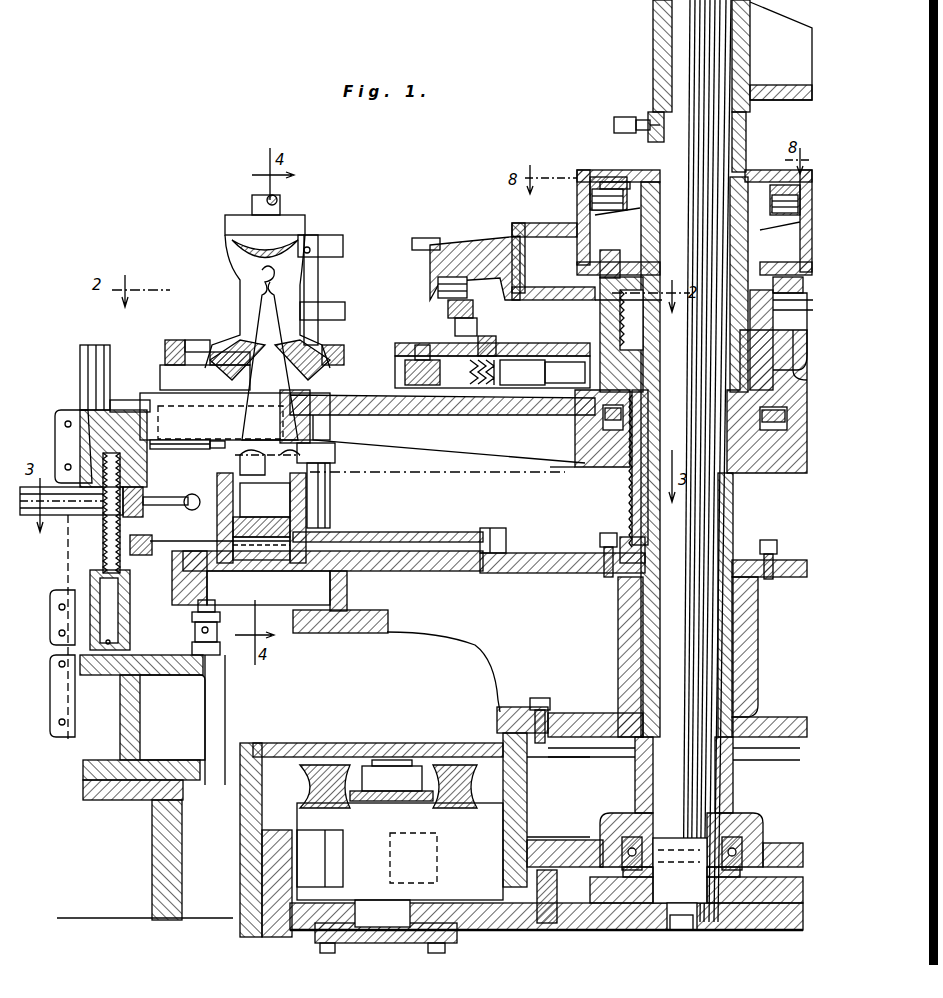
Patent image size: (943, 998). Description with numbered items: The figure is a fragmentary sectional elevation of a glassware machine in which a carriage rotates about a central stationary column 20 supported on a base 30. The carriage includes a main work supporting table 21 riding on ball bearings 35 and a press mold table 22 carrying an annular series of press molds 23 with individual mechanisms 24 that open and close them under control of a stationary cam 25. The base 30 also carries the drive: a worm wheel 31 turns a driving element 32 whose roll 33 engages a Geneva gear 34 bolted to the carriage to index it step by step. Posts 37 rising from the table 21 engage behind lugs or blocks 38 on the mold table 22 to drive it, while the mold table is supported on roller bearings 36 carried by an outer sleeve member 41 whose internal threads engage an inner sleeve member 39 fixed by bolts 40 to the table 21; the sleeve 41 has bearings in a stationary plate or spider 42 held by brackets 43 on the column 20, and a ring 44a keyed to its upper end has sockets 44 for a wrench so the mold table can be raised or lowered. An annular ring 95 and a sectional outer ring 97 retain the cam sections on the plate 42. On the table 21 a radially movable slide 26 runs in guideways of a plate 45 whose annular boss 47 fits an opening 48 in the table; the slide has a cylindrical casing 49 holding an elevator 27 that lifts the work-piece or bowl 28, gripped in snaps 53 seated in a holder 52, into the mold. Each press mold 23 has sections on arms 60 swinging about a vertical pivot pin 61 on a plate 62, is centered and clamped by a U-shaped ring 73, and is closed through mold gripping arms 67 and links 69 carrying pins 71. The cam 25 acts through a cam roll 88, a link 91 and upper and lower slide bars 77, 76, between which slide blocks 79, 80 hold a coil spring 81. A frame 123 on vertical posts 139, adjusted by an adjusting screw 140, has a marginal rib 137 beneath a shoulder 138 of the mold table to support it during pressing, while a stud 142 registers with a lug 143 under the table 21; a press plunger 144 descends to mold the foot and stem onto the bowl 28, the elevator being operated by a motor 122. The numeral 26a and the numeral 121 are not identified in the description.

The central stationary column 20 is at (700, 658).
The main work supporting table 21 is at (572, 575).
The press mold table 22 is at (512, 414).
The press mold 23 is at (240, 306).
The mold operating mechanism 24 is at (415, 321).
The stationary cam 25 is at (500, 300).
The slide 26 is at (450, 532).
The rod end 26a is at (210, 553).
The elevator 27 is at (337, 455).
The work-piece or bowl 28 is at (250, 418).
The base 30 is at (615, 925).
The worm wheel 31 is at (313, 770).
The driving element 32 is at (315, 883).
The roll 33 is at (305, 840).
The Geneva gear 34 is at (480, 878).
The ball bearings 35 is at (625, 840).
The roller bearings 36 is at (773, 430).
The post 37 is at (332, 516).
The lug or block 38 is at (330, 468).
The inner sleeve member 39 is at (632, 500).
The bolts 40 is at (606, 534).
The outer sleeve member 41 is at (612, 445).
The stationary plate or spider 42 is at (587, 261).
The bracket 43 is at (596, 175).
The socket 44 is at (592, 178).
The ring 44a is at (623, 185).
The plate 45 is at (440, 572).
The annular boss 47 is at (205, 572).
The opening 48 is at (297, 602).
The cylindrical casing 49 is at (330, 500).
The holder 52 is at (312, 430).
The snaps 53 is at (200, 449).
The arm 60 is at (312, 258).
The vertical pivot pin 61 is at (320, 290).
The plate 62 is at (345, 352).
The mold gripping arm 67 is at (165, 372).
The link 69 is at (168, 348).
The pin 71 is at (190, 345).
The U-shaped member or ring 73 is at (330, 312).
The lower slide bar 76 is at (493, 415).
The upper slide bar 77 is at (540, 360).
The slide block 79 is at (440, 365).
The slide block 80 is at (560, 362).
The coil spring 81 is at (480, 386).
The cam roll 88 is at (438, 285).
The link 91 is at (497, 340).
The annular plate or ring 95 is at (470, 250).
The outer ring 97 is at (418, 240).
The rack 121 is at (103, 560).
The motor 122 is at (130, 495).
The frame 123 is at (58, 435).
The marginal rib 137 is at (110, 405).
The shoulder 138 is at (100, 395).
The vertical post 139 is at (80, 355).
The adjusting screw 140 is at (103, 545).
The stud 142 is at (195, 632).
The lug 143 is at (192, 615).
The press plunger 144 is at (242, 220).